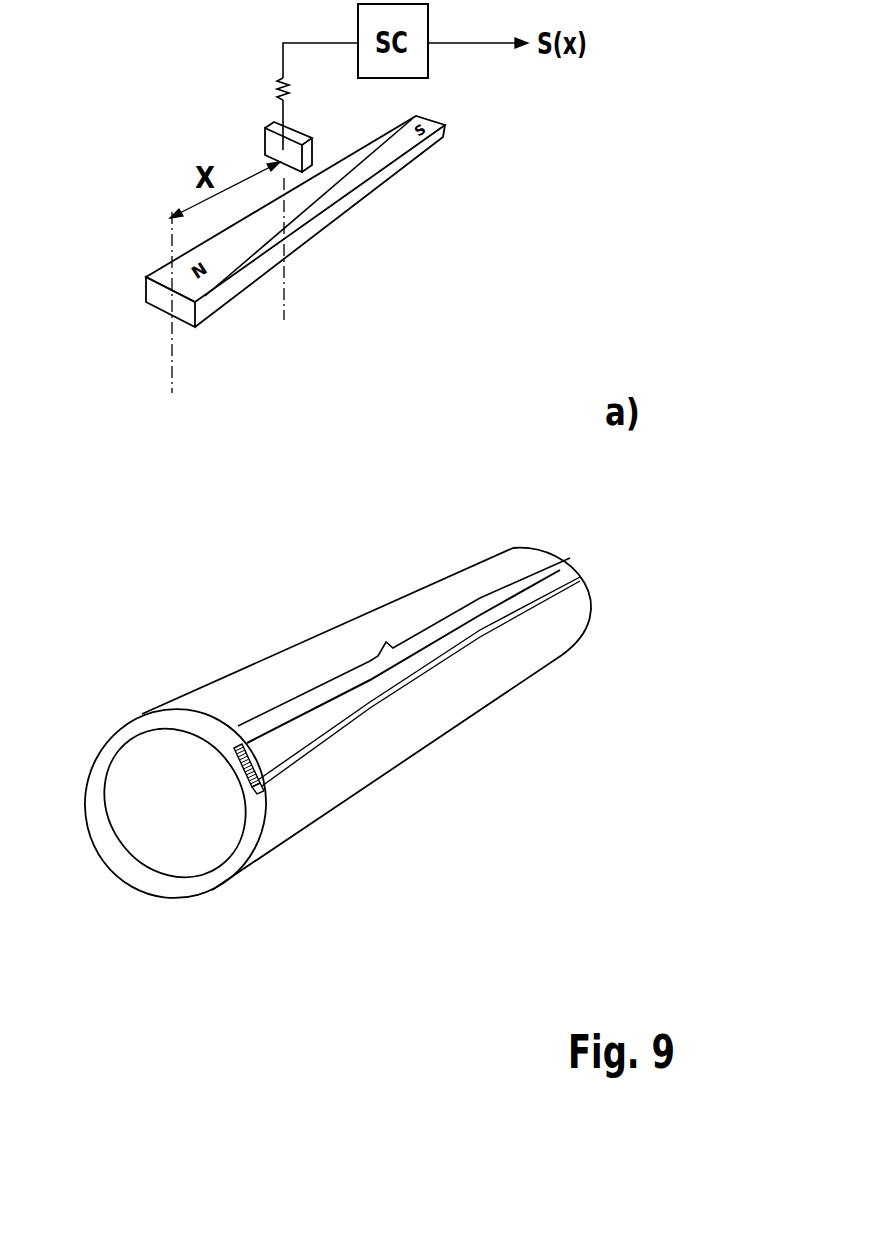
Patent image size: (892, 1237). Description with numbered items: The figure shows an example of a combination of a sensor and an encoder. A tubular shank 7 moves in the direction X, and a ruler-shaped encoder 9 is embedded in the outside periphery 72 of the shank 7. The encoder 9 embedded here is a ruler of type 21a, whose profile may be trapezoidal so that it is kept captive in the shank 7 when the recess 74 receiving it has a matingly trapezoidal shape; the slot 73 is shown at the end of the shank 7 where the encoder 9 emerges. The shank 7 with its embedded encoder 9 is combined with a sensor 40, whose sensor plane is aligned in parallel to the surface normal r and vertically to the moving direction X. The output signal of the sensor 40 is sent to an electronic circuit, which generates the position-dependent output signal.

The 2αx sensor 40 is at (273, 143).
The outside periphery 72 is at (280, 665).
The shank 7 is at (196, 884).
The encoder 9 is at (404, 654).
The ruler type 21a is at (420, 672).
The recess 74 is at (234, 759).
The slot 73 is at (262, 791).